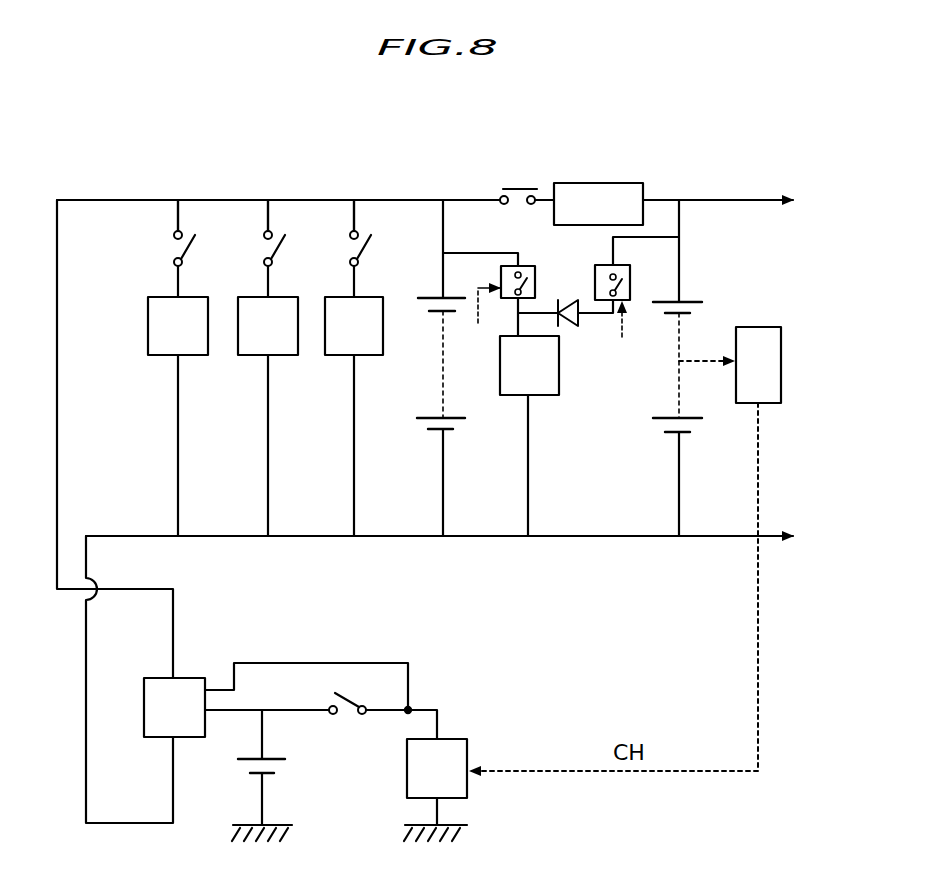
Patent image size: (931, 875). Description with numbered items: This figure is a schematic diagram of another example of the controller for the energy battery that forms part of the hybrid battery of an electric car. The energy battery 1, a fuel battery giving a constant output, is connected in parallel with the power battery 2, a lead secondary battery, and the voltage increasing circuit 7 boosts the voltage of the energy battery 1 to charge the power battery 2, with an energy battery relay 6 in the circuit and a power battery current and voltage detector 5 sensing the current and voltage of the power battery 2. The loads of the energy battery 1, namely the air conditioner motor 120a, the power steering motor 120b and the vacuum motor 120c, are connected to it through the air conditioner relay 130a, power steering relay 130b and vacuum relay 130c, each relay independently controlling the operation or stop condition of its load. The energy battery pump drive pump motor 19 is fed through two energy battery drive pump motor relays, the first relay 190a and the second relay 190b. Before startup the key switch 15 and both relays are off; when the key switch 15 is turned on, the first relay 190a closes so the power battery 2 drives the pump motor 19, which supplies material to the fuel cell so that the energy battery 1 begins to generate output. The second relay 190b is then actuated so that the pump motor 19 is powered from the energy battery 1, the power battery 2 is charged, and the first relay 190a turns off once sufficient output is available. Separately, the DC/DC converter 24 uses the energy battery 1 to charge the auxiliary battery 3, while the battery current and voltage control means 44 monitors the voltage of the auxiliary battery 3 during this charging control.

The energy battery 1 is at (423, 392).
The power battery 2 is at (660, 393).
The auxiliary battery 3 is at (283, 767).
The power battery current and voltage detector 5 is at (781, 368).
The energy battery relay 6 is at (523, 188).
The voltage increasing circuit 7 is at (583, 184).
The key switch 15 is at (349, 713).
The energy battery pump drive pump motor 19 is at (559, 372).
The DC/DC converter 24 is at (186, 678).
The battery current and voltage control means 44 is at (467, 798).
The air conditioner motor 120a is at (148, 356).
The power steering motor 120b is at (238, 356).
The vacuum motor 120c is at (325, 356).
The air conditioner relay 130a is at (172, 250).
The power steering relay 130b is at (262, 250).
The vacuum relay 130c is at (348, 250).
The first relay 190a is at (636, 282).
The second relay 190b is at (493, 274).